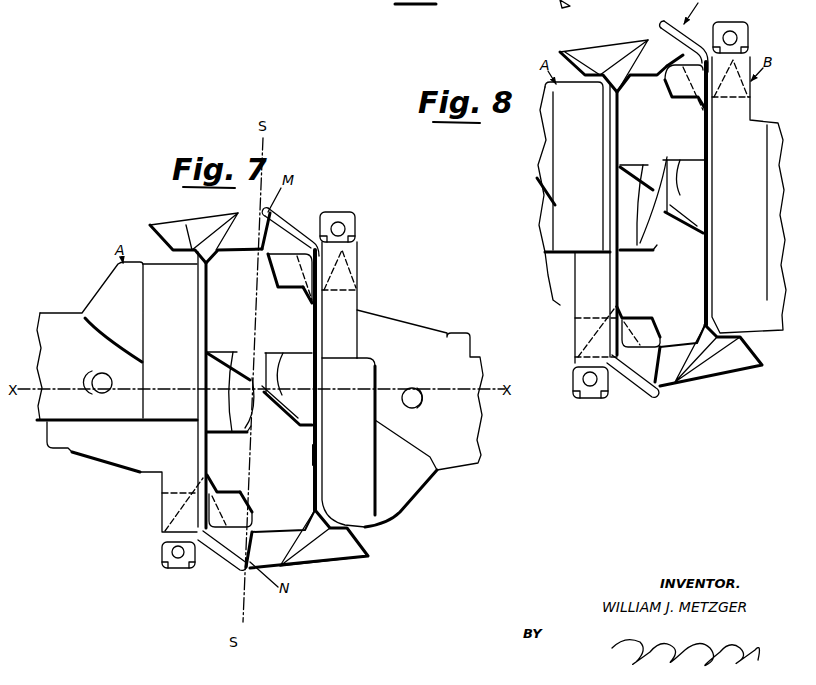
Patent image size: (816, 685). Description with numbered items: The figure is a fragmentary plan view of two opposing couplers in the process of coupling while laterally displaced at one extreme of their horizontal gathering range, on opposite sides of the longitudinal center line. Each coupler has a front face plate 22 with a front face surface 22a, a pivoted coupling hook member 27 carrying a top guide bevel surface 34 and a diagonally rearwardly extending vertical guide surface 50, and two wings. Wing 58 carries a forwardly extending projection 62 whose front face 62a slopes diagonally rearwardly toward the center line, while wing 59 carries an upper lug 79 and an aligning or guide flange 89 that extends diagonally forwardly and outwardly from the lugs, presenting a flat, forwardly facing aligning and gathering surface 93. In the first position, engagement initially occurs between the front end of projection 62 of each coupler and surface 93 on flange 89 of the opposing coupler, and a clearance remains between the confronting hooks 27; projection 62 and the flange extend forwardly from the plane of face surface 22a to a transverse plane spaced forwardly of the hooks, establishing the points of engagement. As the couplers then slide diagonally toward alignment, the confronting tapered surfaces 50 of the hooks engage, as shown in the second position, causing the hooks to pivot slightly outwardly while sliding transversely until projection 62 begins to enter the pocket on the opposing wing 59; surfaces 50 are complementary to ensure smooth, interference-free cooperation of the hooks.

In FIG. 7, the front face plate 22 is at (204, 314).
In FIG. 8, the front face plate 22 is at (614, 135).
In FIG. 7, the front face surface 22a is at (313, 452).
In FIG. 7, the coupling hook member 27 is at (263, 350).
In FIG. 8, the coupling hook member 27 is at (692, 157).
In FIG. 7, the top guide bevel surface 34 is at (252, 432).
In FIG. 7, the vertical guide surface 50 is at (252, 377).
In FIG. 8, the vertical guide surface 50 is at (657, 190).
In FIG. 7, the wing 58 is at (152, 225).
In FIG. 8, the wing 58 is at (613, 44).
In FIG. 7, the wing 59 is at (300, 220).
In FIG. 8, the wing 59 is at (620, 378).
In FIG. 7, the projection 62 is at (238, 212).
In FIG. 8, the projection 62 is at (656, 37).
In FIG. 7, the front face 62a is at (268, 255).
In FIG. 7, the upper lug 79 is at (274, 290).
In FIG. 7, the aligning or guide flange 89 is at (286, 220).
In FIG. 8, the aligning or guide flange 89 is at (690, 42).
In FIG. 7, the aligning and gathering surface 93 is at (277, 287).
In FIG. 8, the aligning and gathering surface 93 is at (662, 80).